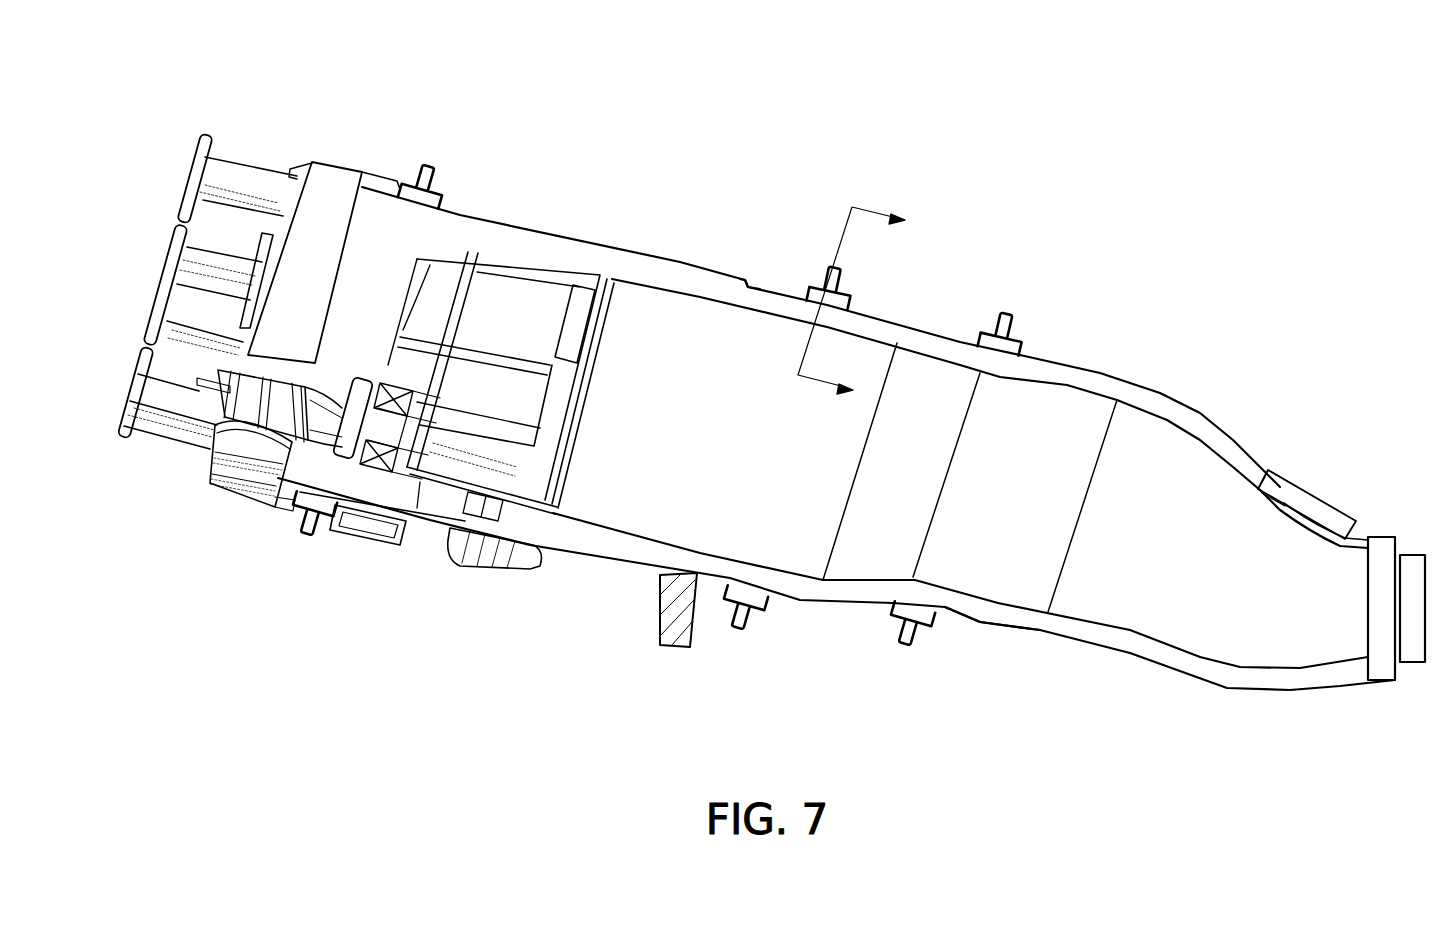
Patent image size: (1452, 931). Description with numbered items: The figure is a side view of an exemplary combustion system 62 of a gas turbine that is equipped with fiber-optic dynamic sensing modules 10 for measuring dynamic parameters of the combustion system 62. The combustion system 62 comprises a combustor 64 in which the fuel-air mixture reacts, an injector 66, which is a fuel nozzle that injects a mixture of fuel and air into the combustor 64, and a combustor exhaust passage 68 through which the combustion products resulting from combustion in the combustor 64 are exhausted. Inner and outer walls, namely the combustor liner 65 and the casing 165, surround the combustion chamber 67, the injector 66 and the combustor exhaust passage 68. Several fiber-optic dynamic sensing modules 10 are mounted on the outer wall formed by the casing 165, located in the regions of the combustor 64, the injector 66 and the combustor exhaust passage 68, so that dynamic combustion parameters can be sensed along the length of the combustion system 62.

The combustion system 62 is at (1249, 96).
The fiber-optic dynamic sensing module 10 is at (425, 162).
The combustor liner 65 is at (632, 285).
The casing 165 is at (684, 260).
The injector 66 is at (323, 442).
The combustion chamber 67 is at (597, 505).
The combustor 64 is at (653, 582).
The combustor exhaust passage 68 is at (998, 582).